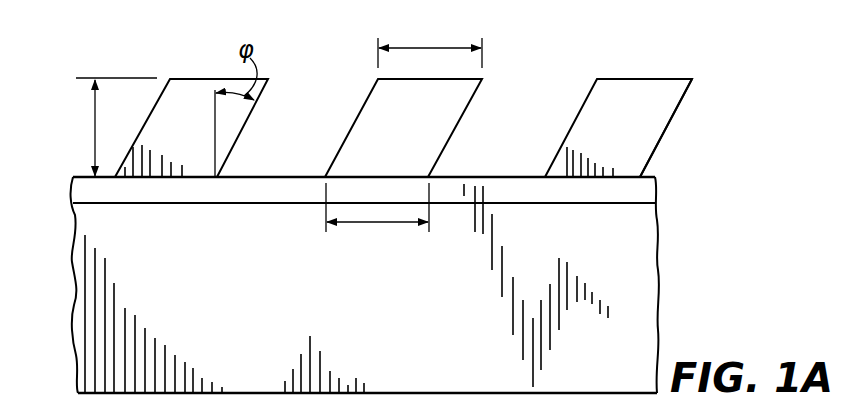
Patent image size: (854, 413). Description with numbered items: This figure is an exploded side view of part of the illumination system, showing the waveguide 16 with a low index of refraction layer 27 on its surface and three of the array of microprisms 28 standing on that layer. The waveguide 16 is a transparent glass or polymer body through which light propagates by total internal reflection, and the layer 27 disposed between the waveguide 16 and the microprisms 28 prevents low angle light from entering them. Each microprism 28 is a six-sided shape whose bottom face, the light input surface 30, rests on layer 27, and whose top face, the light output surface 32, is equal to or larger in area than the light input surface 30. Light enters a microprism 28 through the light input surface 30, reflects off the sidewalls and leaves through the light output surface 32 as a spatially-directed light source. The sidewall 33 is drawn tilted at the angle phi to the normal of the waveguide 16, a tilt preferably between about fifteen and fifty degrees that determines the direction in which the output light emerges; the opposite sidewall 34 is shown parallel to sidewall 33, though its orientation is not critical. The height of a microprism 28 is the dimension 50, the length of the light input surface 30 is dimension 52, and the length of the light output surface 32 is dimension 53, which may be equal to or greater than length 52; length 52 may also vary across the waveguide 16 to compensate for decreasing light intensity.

The waveguide 16 is at (651, 250).
The low index of refraction layer 27 is at (655, 186).
The microprism 28 is at (640, 101).
The light input surface 30 is at (397, 176).
The light output surface 32 is at (410, 80).
The sidewall 33 is at (667, 121).
The sidewall 34 is at (575, 116).
The height 50 is at (90, 118).
The length 52 is at (376, 223).
The length 53 is at (431, 46).